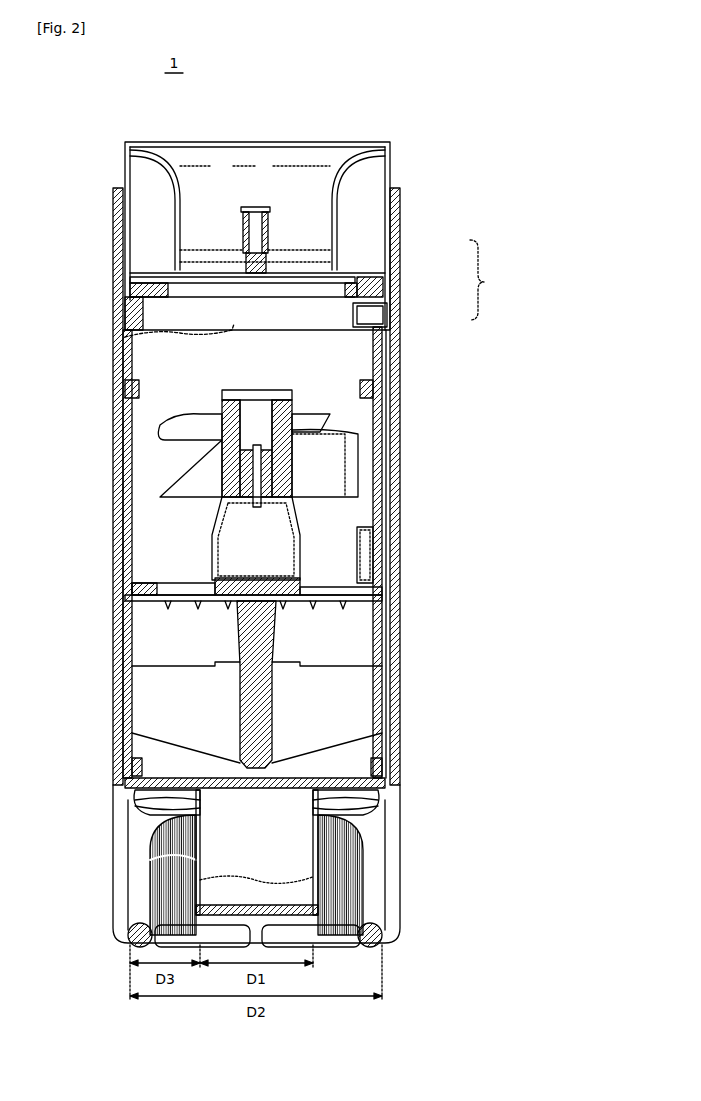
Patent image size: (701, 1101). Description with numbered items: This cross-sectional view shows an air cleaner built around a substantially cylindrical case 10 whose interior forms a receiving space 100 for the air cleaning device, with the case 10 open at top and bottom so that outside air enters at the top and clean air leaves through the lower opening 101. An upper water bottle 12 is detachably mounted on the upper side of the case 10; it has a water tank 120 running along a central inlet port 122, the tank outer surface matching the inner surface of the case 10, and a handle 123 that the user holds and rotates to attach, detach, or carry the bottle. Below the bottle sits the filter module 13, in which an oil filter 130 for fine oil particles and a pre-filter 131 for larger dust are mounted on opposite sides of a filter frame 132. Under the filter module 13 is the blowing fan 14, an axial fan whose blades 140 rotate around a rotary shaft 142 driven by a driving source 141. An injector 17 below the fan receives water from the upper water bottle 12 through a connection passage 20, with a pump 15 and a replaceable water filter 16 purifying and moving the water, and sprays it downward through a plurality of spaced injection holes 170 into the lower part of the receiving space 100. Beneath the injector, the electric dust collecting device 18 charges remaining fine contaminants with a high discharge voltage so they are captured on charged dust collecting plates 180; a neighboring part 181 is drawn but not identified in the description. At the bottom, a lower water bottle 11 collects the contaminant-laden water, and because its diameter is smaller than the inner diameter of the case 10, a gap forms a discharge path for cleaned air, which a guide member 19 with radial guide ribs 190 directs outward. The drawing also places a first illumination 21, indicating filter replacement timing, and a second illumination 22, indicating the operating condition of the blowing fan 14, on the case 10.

The case 10 is at (113, 478).
The lower water bottle 11 is at (165, 873).
The upper water bottle 12 is at (390, 160).
The filter module 13 is at (486, 280).
The blowing fan 14 is at (172, 448).
The pump 15 is at (378, 565).
The water filter 16 is at (373, 530).
The injector 17 is at (318, 585).
The electric dust collecting device 18 is at (362, 664).
The guide member 19 is at (404, 824).
The connection passage 20 is at (395, 350).
The first illumination 21 is at (132, 768).
The second illumination 22 is at (131, 390).
The receiving space 100 is at (125, 337).
The lower opening 101 is at (143, 812).
The water tank 120 is at (362, 185).
The inlet port 122 is at (301, 188).
The handle 123 is at (253, 207).
The oil filter 130 is at (370, 278).
The pre-filter 131 is at (370, 312).
The filter frame 132 is at (398, 283).
The blades 140 is at (365, 426).
The driving source 141 is at (233, 550).
The rotary shaft 142 is at (265, 455).
The injection holes 170 is at (163, 608).
The dust collecting plates 180 is at (365, 688).
The filter guide 181 is at (370, 745).
The guide ribs 190 is at (365, 885).